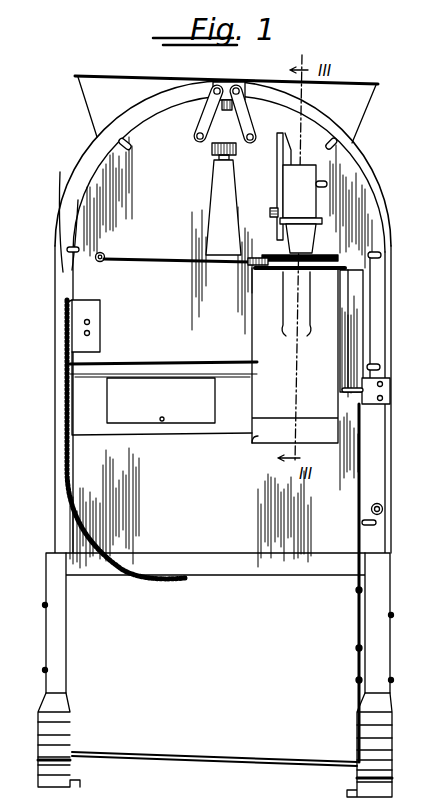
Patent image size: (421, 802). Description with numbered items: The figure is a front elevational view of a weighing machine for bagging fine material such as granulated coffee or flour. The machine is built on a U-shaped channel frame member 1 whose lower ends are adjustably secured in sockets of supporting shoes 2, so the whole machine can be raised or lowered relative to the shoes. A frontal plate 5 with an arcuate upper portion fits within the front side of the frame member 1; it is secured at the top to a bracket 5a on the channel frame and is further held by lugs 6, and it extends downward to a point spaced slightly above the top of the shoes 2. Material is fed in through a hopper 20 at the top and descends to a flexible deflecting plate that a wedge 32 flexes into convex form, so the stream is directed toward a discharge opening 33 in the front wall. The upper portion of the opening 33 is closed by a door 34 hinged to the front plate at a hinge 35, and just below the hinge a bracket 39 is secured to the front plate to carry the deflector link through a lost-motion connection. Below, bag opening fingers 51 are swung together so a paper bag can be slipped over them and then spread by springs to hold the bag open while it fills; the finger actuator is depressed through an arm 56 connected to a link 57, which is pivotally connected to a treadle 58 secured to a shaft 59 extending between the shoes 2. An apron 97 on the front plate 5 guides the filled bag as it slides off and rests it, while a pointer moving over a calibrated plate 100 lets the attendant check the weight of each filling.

The U-shaped channel frame member 1 is at (385, 292).
The supporting shoes 2 is at (50, 648).
The frontal plate 5 is at (204, 564).
The bracket 5a is at (246, 96).
The lugs 6 is at (118, 143).
The hopper 20 is at (356, 97).
The wedge 32 is at (295, 237).
The discharge opening 33 is at (316, 218).
The door 34 is at (302, 170).
The hinge 35 is at (277, 176).
The bracket 39 is at (270, 214).
The bag opening finger 51 is at (299, 331).
The arm 56 is at (352, 270).
The link 57 is at (362, 493).
The treadle 58 is at (355, 768).
The shaft 59 is at (228, 765).
The apron 97 is at (208, 196).
The calibrated plate 100 is at (213, 153).